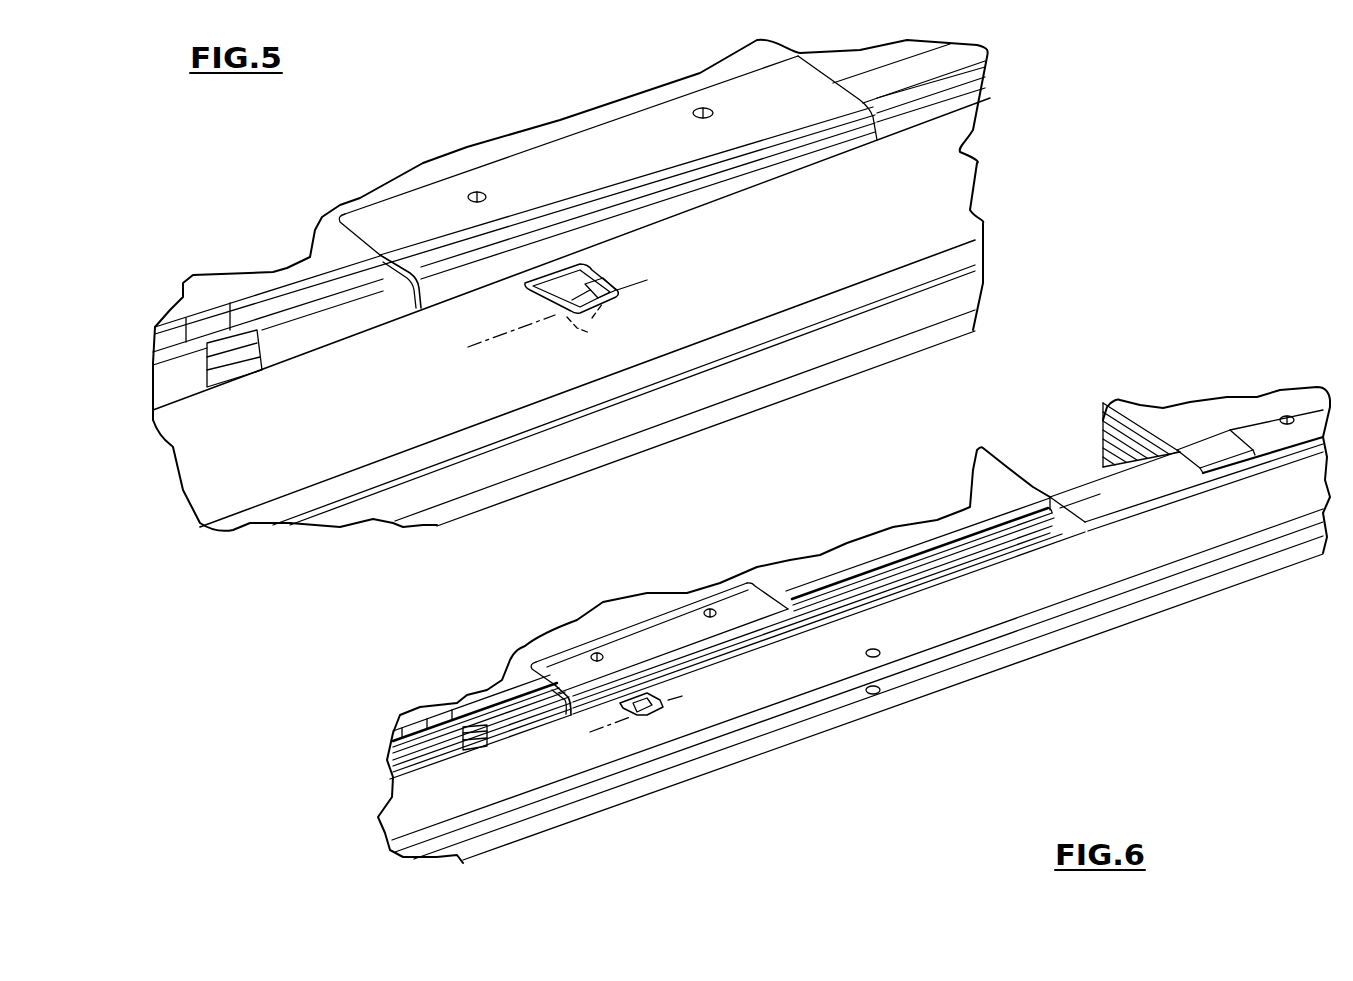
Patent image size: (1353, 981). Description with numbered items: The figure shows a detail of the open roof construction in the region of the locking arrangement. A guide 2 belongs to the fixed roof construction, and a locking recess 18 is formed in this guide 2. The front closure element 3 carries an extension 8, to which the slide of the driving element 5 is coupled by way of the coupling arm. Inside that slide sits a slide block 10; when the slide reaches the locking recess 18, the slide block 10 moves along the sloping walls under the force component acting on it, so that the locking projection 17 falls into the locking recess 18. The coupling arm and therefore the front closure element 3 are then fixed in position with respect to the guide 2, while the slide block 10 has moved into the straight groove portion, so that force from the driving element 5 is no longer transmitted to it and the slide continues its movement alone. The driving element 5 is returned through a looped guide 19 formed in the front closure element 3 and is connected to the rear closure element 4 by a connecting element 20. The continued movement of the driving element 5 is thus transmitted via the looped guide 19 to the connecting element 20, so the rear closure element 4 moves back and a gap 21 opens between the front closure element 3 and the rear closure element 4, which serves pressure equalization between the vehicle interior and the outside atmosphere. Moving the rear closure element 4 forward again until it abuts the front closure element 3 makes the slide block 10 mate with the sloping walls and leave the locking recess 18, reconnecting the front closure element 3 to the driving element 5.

In FIG. 5, the guide 2 is at (950, 229).
In FIG. 6, the guide 2 is at (862, 708).
In FIG. 5, the front closure element 3 is at (303, 270).
In FIG. 6, the front closure element 3 is at (970, 512).
In FIG. 6, the rear closure element 4 is at (1205, 420).
In FIG. 6, the driving element 5 is at (977, 548).
In FIG. 5, the extension 8 is at (455, 207).
In FIG. 6, the extension 8 is at (567, 670).
In FIG. 5, the slide block 10 is at (590, 293).
In FIG. 6, the slide block 10 is at (663, 707).
In FIG. 5, the locking projection 17 is at (572, 285).
In FIG. 6, the locking projection 17 is at (633, 703).
In FIG. 5, the locking recess 18 is at (543, 278).
In FIG. 6, the locking recess 18 is at (660, 703).
In FIG. 6, the looped guide 19 is at (468, 728).
In FIG. 6, the connecting element 20 is at (1100, 504).
In FIG. 6, the gap 21 is at (1076, 390).